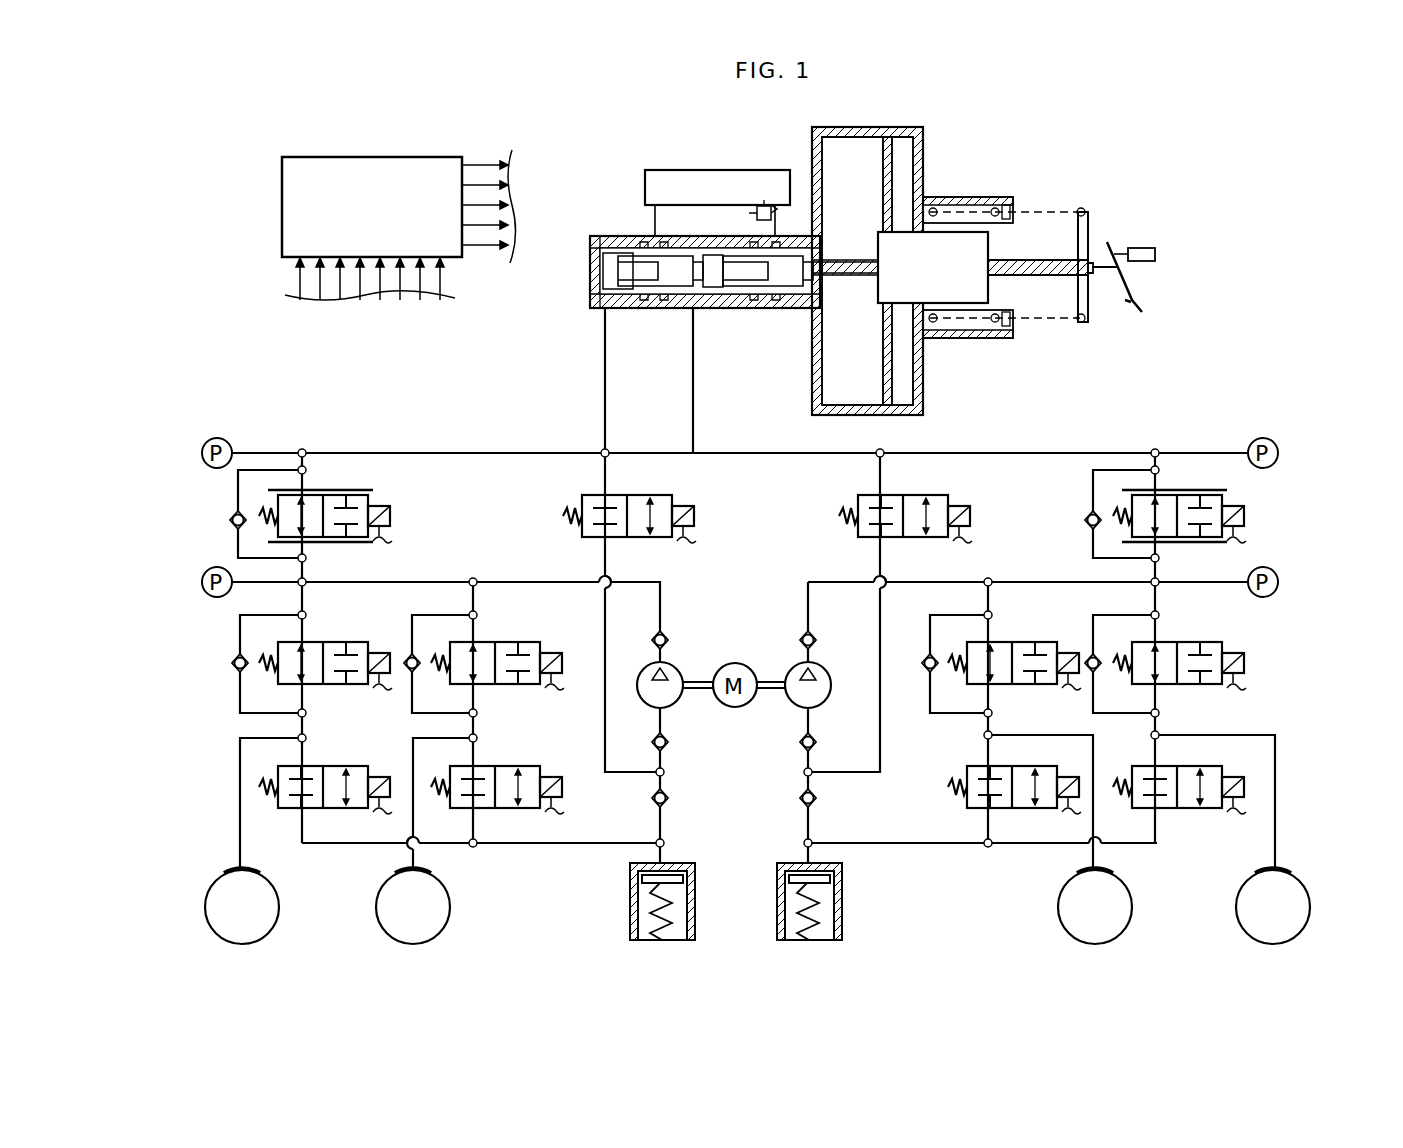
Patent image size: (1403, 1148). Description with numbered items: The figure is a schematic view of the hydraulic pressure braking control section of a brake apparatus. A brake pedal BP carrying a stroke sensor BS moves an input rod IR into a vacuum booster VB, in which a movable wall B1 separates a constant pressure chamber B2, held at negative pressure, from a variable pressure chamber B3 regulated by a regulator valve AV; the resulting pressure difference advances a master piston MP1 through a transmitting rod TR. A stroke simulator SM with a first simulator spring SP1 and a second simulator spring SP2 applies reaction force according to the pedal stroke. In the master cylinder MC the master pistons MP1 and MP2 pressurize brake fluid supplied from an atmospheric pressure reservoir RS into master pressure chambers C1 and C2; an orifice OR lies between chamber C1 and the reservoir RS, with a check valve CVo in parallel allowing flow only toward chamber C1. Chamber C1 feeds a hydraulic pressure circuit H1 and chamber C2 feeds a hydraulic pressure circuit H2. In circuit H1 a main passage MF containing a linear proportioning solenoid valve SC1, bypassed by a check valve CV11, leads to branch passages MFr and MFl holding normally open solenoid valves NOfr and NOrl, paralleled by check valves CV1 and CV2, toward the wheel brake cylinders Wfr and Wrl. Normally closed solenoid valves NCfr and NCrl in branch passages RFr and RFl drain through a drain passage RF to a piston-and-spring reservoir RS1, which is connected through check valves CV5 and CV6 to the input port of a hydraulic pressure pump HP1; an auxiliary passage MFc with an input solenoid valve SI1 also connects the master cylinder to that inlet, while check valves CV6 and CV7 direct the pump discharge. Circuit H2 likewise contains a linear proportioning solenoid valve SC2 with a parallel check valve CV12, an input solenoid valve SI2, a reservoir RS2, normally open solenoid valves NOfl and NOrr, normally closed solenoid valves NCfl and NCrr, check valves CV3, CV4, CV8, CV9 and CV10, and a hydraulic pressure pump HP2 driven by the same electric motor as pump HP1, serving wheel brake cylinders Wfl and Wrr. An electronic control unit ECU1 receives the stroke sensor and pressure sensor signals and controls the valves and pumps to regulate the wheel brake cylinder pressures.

The electronic control unit ECU1 is at (366, 157).
The master cylinder MC is at (588, 234).
The atmospheric pressure reservoir RS is at (645, 178).
The orifice OR is at (790, 212).
The check valve CVo is at (755, 213).
The master pressure chamber C2 is at (600, 292).
The master pressure chamber C1 is at (708, 296).
The master piston MP2 is at (677, 292).
The master piston MP1 is at (790, 292).
The transmitting rod TR is at (812, 292).
The vacuum booster VB is at (928, 133).
The movable wall B1 is at (886, 388).
The constant pressure chamber B2 is at (848, 385).
The variable pressure chamber B3 is at (905, 398).
The regulator valve AV is at (940, 245).
The stroke simulator SM is at (1058, 210).
The input rod IR is at (1047, 285).
The first simulator spring SP1 is at (1028, 325).
The second simulator spring SP2 is at (945, 328).
The brake pedal BP is at (1125, 293).
The stroke sensor BS is at (1142, 248).
The hydraulic pressure circuit H1 is at (692, 402).
The hydraulic pressure circuit H2 is at (603, 378).
The main passage MF is at (997, 450).
The branch passage MFl is at (986, 596).
The branch passage MFr is at (1153, 596).
The auxiliary passage MFc is at (883, 718).
The drain passage RF is at (900, 843).
The branch passage RFl is at (985, 830).
The branch passage RFr is at (1014, 843).
The linear proportioning solenoid valve SC1 is at (1172, 493).
The linear proportioning solenoid valve SC2 is at (318, 493).
The input solenoid valve SI1 is at (898, 493).
The input solenoid valve SI2 is at (622, 493).
The normally open solenoid valve NOrr is at (315, 640).
The normally open solenoid valve NOfl is at (487, 640).
The normally open solenoid valve NOrl is at (1003, 640).
The normally open solenoid valve NOfr is at (1167, 640).
The normally closed solenoid valve NCrr is at (318, 764).
The normally closed solenoid valve NCfl is at (490, 764).
The normally closed solenoid valve NCrl is at (1003, 764).
The normally closed solenoid valve NCfr is at (1167, 764).
The check valve CV1 is at (1097, 656).
The check valve CV2 is at (933, 656).
The check valve CV3 is at (415, 656).
The check valve CV4 is at (243, 656).
The check valve CV5 is at (802, 790).
The check valve CV6 is at (800, 738).
The check valve CV7 is at (804, 634).
The check valve CV8 is at (668, 795).
The check valve CV9 is at (668, 740).
The check valve CV10 is at (668, 636).
The check valve CV11 is at (1090, 513).
The check valve CV12 is at (235, 513).
The hydraulic pressure pump HP1 is at (803, 663).
The hydraulic pressure pump HP2 is at (672, 665).
The reservoir RS1 is at (843, 880).
The reservoir RS2 is at (628, 878).
The wheel brake cylinder Wrr is at (225, 872).
The wheel brake cylinder Wfl is at (430, 872).
The wheel brake cylinder Wrl is at (1100, 872).
The wheel brake cylinder Wfr is at (1280, 872).